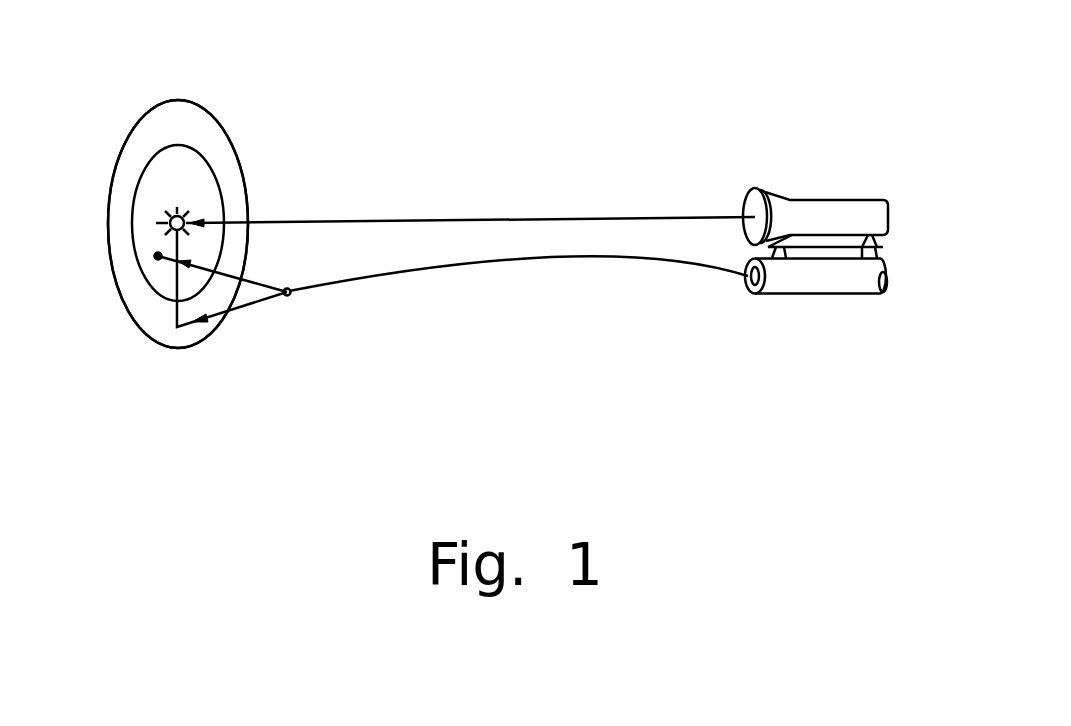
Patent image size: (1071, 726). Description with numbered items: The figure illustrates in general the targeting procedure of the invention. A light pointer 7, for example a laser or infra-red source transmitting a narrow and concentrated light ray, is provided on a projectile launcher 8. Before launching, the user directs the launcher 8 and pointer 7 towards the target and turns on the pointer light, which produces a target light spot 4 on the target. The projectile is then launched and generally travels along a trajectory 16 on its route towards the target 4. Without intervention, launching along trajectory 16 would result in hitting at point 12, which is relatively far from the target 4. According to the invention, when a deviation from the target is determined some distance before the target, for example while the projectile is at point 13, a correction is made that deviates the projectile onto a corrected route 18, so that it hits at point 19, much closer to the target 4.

The target 4 is at (178, 215).
The light pointer 7 is at (828, 212).
The projectile launcher 8 is at (822, 283).
The hitting point 12 is at (186, 332).
The deviation determination point 13 is at (288, 295).
The trajectory 16 is at (537, 262).
The corrected route 18 is at (258, 283).
The corrected hitting point 19 is at (158, 256).